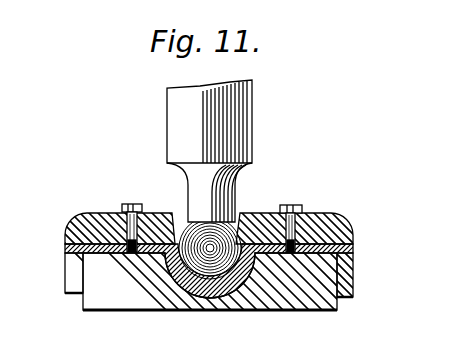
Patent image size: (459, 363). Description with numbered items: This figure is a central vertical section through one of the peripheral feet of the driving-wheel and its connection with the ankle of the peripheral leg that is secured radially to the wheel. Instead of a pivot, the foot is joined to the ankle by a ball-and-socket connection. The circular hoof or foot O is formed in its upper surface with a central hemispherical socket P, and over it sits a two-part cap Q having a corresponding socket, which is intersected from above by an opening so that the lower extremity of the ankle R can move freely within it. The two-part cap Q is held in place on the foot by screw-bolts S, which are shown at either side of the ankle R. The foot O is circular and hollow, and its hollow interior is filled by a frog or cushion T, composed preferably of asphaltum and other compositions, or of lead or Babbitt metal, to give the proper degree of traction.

The ankle R is at (258, 153).
The screw-bolts S is at (128, 204).
The two-part cap Q is at (345, 223).
The circular hoof or foot O is at (354, 272).
The frog or cushion T is at (152, 300).
The central hemispherical socket P is at (258, 297).